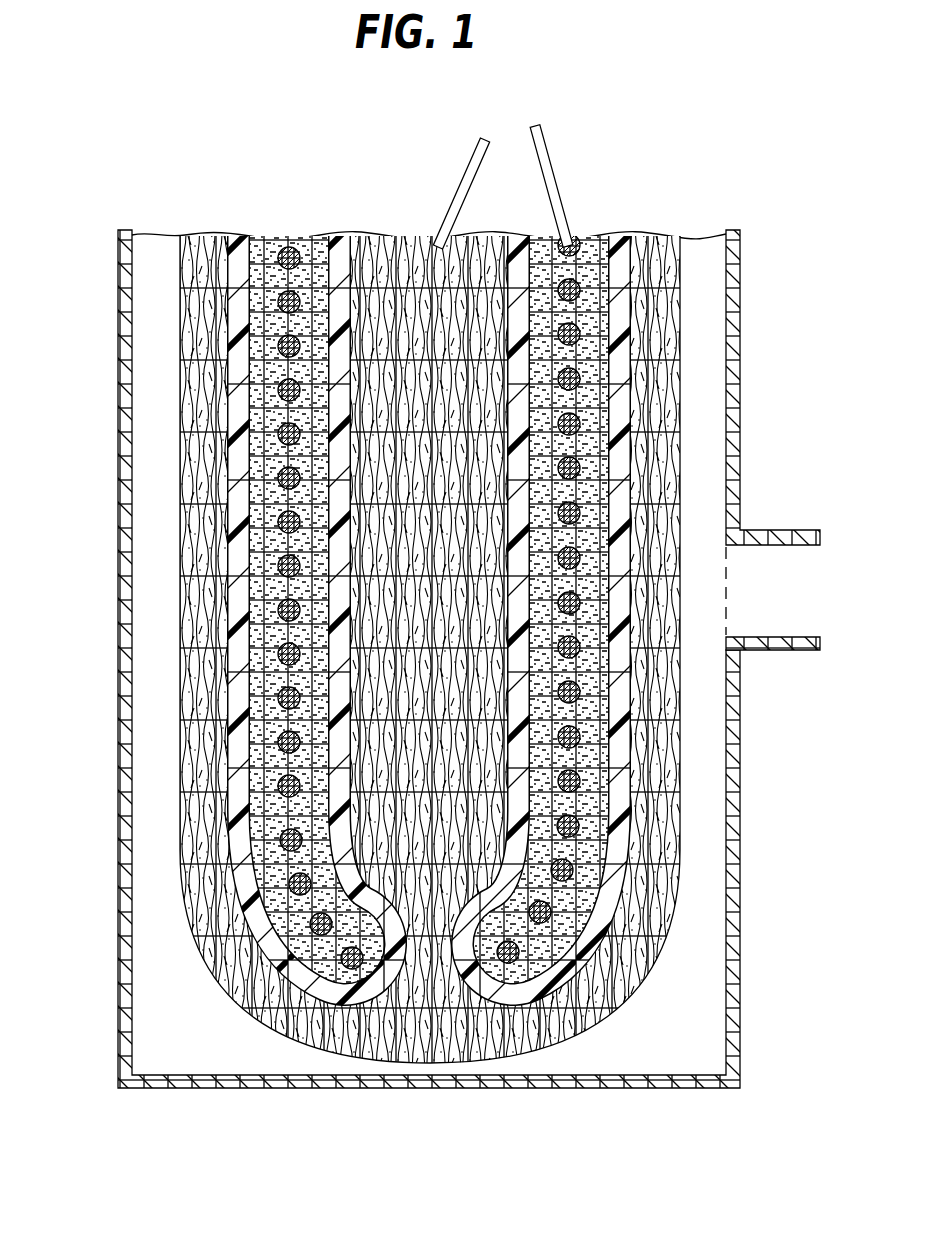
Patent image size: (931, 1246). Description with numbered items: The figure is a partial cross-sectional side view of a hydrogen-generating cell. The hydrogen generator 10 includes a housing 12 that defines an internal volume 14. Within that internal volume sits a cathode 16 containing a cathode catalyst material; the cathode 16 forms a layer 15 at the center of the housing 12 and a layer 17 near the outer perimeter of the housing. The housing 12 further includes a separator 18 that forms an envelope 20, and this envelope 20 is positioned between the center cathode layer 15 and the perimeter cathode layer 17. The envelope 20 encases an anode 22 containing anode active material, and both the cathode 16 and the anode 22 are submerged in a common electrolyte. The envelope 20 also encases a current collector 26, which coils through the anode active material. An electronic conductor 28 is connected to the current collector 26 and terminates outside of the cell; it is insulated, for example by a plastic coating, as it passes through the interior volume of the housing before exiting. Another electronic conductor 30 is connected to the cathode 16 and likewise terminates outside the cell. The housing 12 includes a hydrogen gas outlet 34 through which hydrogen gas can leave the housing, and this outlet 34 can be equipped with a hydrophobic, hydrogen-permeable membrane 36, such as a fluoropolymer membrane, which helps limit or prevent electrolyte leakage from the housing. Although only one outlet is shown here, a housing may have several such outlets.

The hydrogen generator 10 is at (122, 180).
The housing 12 is at (123, 470).
The internal volume 14 is at (155, 562).
The center cathode layer 15 is at (445, 574).
The cathode 16 is at (493, 247).
The perimeter cathode layer 17 is at (207, 903).
The separator 18 is at (622, 247).
The envelope 20 is at (429, 655).
The anode 22 is at (323, 257).
The current collector 26 is at (584, 236).
The electronic conductor 28 is at (553, 148).
The electronic conductor 30 is at (468, 162).
The hydrogen gas outlet 34 is at (760, 553).
The hydrophobic, hydrogen-permeable membrane 36 is at (730, 582).